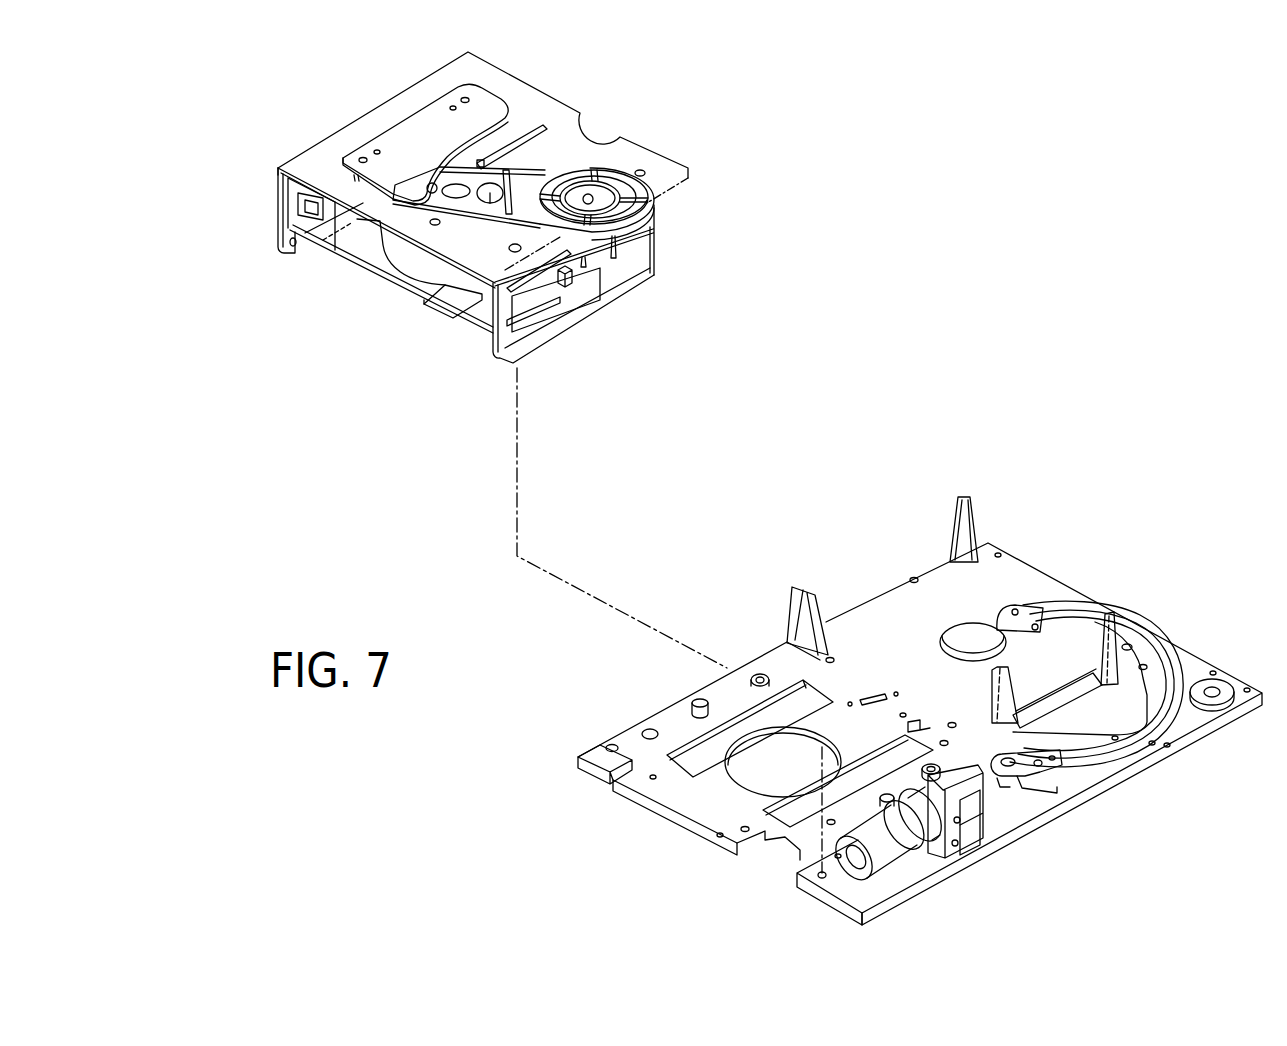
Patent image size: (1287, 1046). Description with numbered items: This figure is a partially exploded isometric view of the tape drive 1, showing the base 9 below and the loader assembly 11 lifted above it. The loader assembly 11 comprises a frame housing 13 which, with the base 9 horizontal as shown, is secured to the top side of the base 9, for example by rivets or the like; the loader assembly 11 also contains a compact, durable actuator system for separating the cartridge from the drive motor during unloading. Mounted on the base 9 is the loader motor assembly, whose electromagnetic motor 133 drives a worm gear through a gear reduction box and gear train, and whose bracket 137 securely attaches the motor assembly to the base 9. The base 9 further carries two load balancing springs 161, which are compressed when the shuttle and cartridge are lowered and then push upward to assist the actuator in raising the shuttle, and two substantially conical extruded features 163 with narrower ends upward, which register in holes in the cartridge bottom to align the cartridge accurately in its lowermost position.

The tape drive 1 is at (948, 184).
The base 9 is at (906, 550).
The loader assembly 11 is at (319, 255).
The frame housing 13 is at (295, 142).
The electromagnetic motor 133 is at (907, 850).
The bracket 137 is at (970, 822).
The load balancing springs 161 is at (698, 713).
The extruded features 163 is at (768, 680).